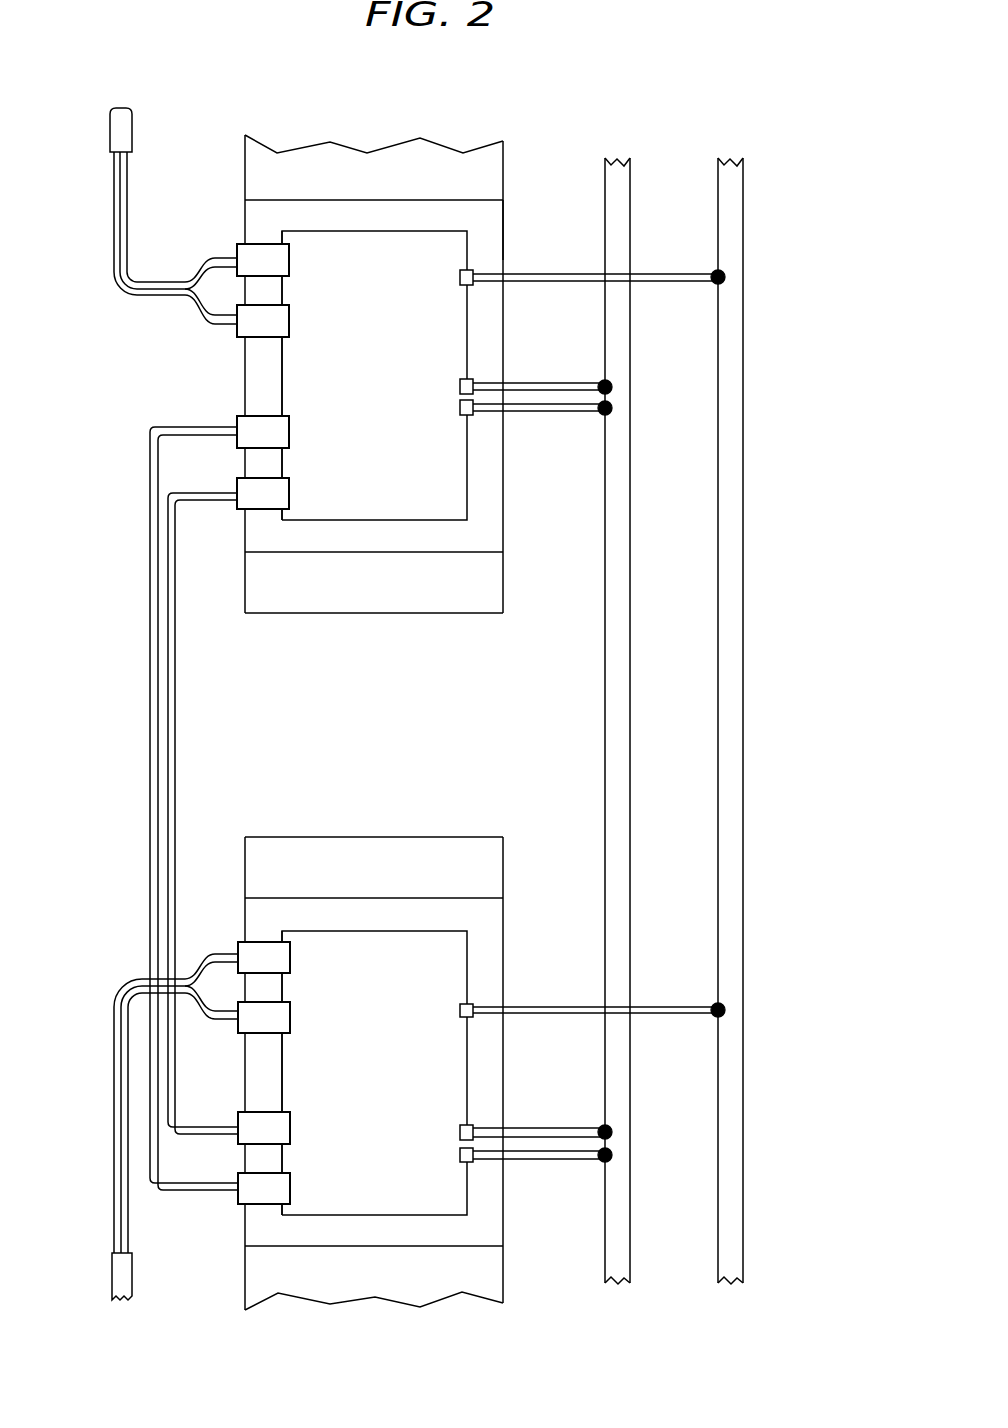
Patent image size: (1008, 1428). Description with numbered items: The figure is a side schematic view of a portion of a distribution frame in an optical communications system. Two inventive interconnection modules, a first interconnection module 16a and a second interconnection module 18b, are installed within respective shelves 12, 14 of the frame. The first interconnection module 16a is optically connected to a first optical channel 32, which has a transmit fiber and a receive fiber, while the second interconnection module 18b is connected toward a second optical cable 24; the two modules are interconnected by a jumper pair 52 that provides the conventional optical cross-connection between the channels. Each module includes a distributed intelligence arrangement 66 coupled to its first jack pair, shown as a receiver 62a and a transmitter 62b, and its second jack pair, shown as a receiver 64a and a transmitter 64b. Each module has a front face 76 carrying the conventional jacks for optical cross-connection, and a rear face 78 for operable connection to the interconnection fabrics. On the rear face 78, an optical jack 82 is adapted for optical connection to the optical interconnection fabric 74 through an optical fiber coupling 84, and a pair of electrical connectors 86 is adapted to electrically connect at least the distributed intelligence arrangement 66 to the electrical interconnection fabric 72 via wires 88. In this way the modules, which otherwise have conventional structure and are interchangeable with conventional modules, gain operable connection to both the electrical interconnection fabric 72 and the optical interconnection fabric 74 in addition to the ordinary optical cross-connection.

The shelf 12 is at (420, 150).
The shelf 14 is at (428, 860).
The interconnection module 16a is at (304, 206).
The interconnection module 18b is at (255, 1232).
The second optical cable 24 is at (112, 1283).
The first optical channel 32 is at (108, 127).
The jumper pair 52 is at (168, 732).
The first jack pair receiver 62a is at (290, 262).
The first jack pair transmitter 62b is at (290, 323).
The second jack pair receiver 64a is at (290, 432).
The second jack pair transmitter 64b is at (290, 494).
The distributed intelligence arrangement 66 is at (298, 363).
The electrical interconnection fabric 72 is at (612, 722).
The optical interconnection fabric 74 is at (743, 523).
The front face 76 is at (245, 395).
The rear face 78 is at (503, 229).
The optical jack 82 is at (458, 278).
The optical fiber coupling 84 is at (664, 272).
The electrical connectors 86 is at (459, 406).
The wires 88 is at (568, 402).